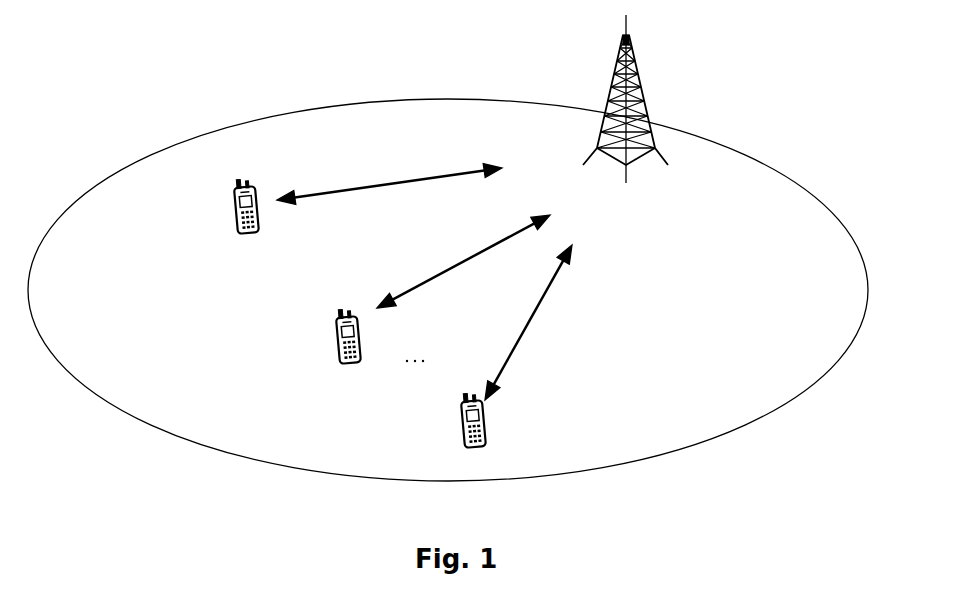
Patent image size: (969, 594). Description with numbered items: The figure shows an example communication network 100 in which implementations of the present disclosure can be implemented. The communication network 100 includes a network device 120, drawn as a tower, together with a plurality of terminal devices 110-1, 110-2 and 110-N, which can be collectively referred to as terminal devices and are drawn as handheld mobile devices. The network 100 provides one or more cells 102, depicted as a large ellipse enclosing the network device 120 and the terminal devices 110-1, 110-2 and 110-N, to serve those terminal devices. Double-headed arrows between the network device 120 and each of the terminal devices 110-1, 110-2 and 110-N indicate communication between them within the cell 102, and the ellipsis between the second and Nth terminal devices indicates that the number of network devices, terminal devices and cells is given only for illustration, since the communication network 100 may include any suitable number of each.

The communication network 100 is at (210, 96).
The cell 102 is at (724, 145).
The terminal device 110-1 is at (233, 204).
The terminal device 110-2 is at (340, 318).
The terminal device 110-N is at (461, 418).
The network device 120 is at (632, 44).